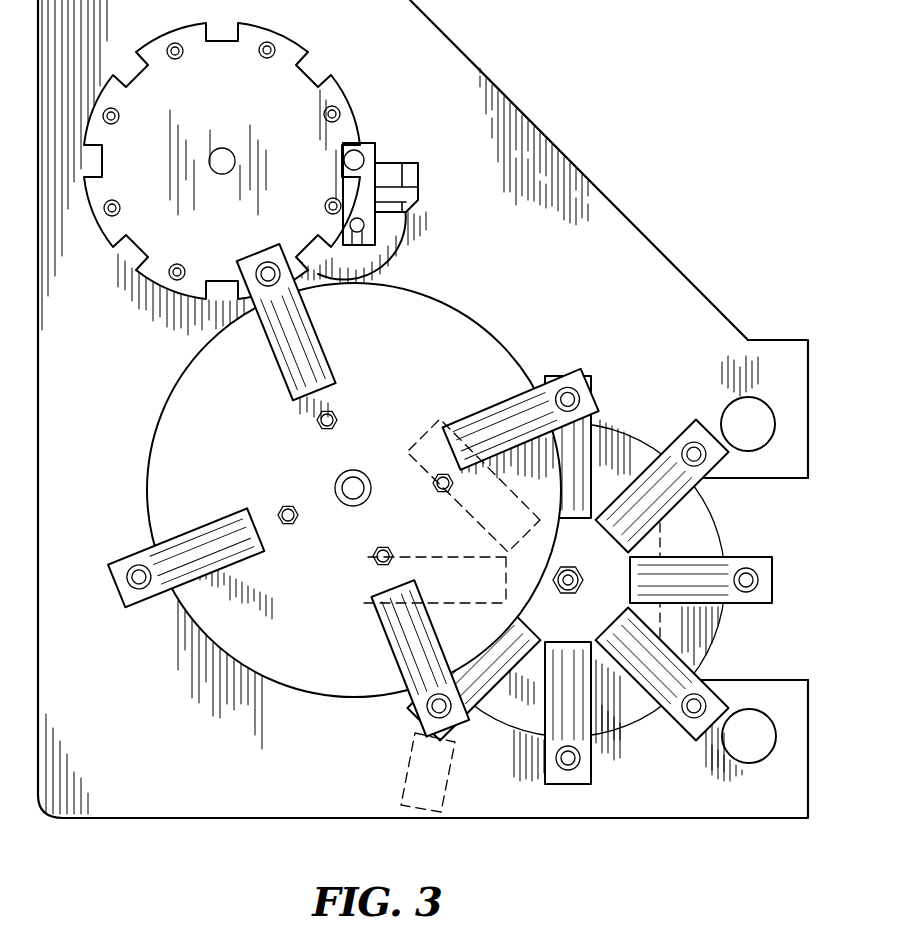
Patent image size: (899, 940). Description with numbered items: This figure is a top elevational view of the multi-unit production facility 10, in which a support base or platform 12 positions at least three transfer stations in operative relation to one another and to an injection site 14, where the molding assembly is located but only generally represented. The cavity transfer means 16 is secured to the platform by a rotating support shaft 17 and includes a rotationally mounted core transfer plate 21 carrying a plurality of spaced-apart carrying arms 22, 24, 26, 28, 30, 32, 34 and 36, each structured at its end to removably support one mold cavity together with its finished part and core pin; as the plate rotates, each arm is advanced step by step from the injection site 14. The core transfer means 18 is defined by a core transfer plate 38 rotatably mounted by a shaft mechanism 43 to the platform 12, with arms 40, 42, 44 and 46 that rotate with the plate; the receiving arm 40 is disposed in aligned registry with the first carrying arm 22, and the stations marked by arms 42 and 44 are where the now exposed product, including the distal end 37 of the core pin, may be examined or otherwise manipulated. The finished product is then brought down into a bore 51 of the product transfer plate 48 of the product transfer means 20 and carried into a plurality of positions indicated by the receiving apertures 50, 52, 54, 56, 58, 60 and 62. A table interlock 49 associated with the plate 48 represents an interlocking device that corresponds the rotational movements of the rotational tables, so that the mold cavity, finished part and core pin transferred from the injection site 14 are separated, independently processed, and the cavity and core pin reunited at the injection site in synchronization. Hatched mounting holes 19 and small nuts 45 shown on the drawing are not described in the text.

The multi-unit production facility 10 is at (657, 140).
The support base or platform 12 is at (700, 285).
The injection site 14 is at (812, 515).
The cavity transfer means 16 is at (589, 595).
The rotating support shaft 17 is at (584, 577).
The core transfer means 18 is at (353, 484).
The mounting holes 19 is at (758, 402).
The product transfer means 20 is at (235, 176).
The core transfer plate 21 is at (722, 542).
The carrying arm 22 is at (738, 606).
The carrying arm 24 is at (692, 736).
The carrying arm 26 is at (565, 787).
The carrying arm 28 is at (493, 693).
The carrying arm 30 is at (415, 550).
The carrying arm 32 is at (455, 528).
The carrying arm 34 is at (595, 440).
The carrying arm 36 is at (678, 428).
The distal end of core pin 37 is at (446, 790).
The core transfer plate 38 is at (445, 300).
The receiving or carrying arm 40 is at (390, 648).
The carrying arm 42 is at (216, 520).
The shaft mechanism 43 is at (348, 503).
The carrying arm 44 is at (303, 310).
The nuts 45 is at (292, 505).
The carrying arm 46 is at (506, 396).
The product transfer plate 48 is at (347, 105).
The table interlock 49 is at (393, 152).
The receiving aperture 50 is at (182, 268).
The bore 51 is at (262, 253).
The receiving aperture 52 is at (118, 205).
The receiving aperture 54 is at (120, 112).
The receiving aperture 56 is at (191, 59).
The receiving aperture 58 is at (276, 58).
The receiving aperture 60 is at (325, 118).
The receiving aperture 62 is at (328, 198).